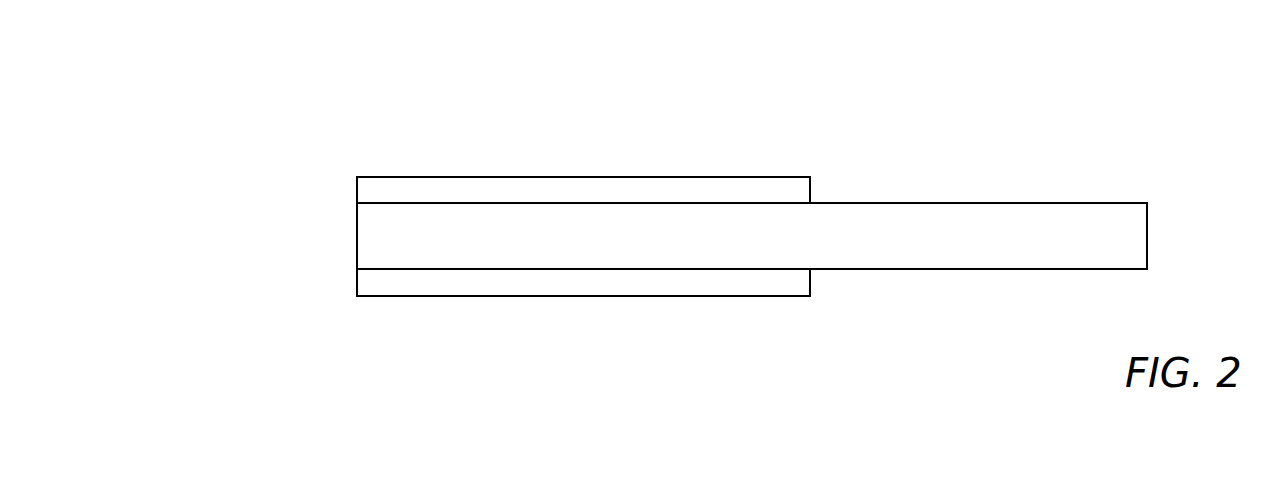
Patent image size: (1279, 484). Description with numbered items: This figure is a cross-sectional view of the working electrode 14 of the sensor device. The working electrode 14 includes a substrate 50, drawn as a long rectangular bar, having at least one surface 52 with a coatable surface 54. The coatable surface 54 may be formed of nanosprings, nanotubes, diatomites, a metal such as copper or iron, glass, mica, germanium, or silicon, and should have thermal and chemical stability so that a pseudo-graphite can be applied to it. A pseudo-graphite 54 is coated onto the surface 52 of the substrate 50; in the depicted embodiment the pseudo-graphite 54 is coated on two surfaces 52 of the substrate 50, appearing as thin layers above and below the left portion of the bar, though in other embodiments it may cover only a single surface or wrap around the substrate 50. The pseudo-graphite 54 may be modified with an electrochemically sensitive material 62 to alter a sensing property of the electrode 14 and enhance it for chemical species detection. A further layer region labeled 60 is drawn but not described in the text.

The working electrode 14 is at (273, 138).
The substrate 50 is at (953, 252).
The surface 52 is at (368, 248).
The coatable surface 54 is at (412, 203).
The first coating portion 60 is at (475, 192).
The electrochemically sensitive material 62 is at (665, 192).